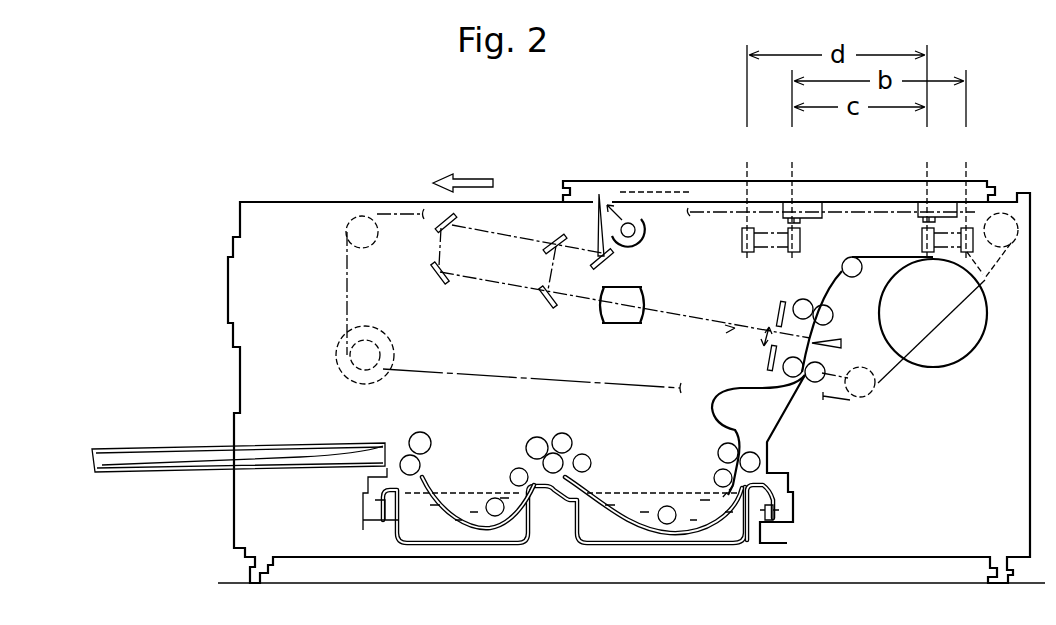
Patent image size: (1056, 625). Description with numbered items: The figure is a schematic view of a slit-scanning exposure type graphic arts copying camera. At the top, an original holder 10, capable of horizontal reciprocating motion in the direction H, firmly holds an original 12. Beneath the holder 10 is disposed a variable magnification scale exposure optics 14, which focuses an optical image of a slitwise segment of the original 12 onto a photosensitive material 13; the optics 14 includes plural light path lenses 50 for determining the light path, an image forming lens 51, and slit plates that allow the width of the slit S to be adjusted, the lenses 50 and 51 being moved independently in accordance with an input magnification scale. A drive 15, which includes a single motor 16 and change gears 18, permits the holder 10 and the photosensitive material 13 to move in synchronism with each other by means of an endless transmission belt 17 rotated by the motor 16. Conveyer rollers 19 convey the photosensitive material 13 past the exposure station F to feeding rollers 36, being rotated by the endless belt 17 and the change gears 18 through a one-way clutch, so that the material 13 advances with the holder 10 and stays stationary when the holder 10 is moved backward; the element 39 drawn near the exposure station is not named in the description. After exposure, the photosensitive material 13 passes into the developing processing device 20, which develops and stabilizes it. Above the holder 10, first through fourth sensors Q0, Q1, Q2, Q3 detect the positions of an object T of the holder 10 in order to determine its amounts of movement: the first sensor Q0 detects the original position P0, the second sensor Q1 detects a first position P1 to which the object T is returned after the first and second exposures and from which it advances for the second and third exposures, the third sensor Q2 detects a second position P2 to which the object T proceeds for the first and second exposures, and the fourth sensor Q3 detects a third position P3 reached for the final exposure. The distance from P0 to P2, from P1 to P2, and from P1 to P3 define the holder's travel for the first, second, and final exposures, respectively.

The original holder 10 is at (838, 181).
The original 12 is at (640, 196).
The photosensitive material 13 is at (822, 305).
The variable magnification scale exposure optics 14 is at (664, 263).
The drive 15 is at (905, 427).
The motor 16 is at (340, 372).
The endless transmission belt 17 is at (507, 378).
The change gears 18 is at (849, 400).
The conveyer rollers 19 is at (800, 299).
The developing processing device 20 is at (615, 455).
The feeding rollers 36 is at (750, 452).
The wedge 39 is at (842, 345).
The light path lens 50 is at (545, 290).
The image forming lens 51 is at (627, 326).
The direction of movement H is at (470, 176).
The object T is at (937, 216).
The slit S is at (766, 338).
The exposure station F is at (822, 328).
The original position P0 is at (966, 164).
The first position P1 is at (927, 151).
The second position P2 is at (792, 164).
The third position P3 is at (747, 151).
The first sensor Q0 is at (984, 276).
The second sensor Q1 is at (922, 242).
The third sensor Q2 is at (800, 246).
The fourth sensor Q3 is at (747, 254).